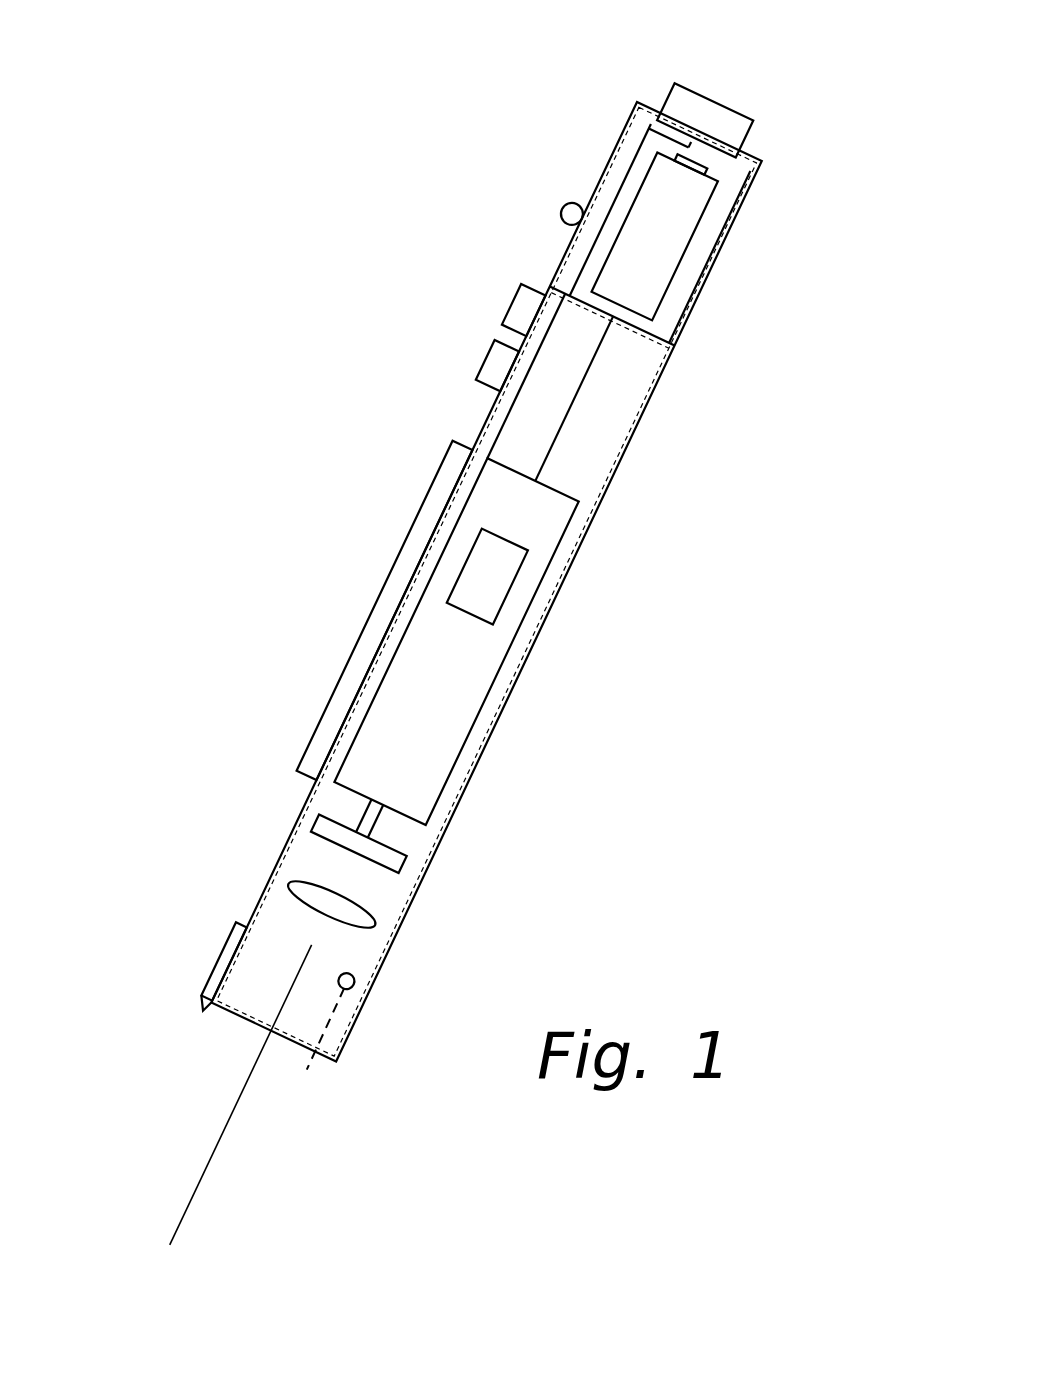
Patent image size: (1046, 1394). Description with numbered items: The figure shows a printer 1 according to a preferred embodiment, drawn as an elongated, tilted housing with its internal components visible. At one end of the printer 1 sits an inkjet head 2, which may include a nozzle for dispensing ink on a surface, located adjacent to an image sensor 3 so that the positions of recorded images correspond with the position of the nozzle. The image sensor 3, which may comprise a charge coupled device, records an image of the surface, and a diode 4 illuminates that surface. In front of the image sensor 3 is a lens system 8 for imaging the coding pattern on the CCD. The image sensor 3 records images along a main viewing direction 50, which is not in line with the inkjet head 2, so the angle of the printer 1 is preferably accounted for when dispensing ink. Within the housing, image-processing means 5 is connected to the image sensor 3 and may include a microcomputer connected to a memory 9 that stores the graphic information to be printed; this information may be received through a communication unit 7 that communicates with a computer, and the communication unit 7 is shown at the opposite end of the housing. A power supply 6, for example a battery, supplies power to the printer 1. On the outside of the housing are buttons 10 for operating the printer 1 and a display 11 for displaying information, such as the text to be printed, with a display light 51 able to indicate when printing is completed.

The printer 1 is at (418, 222).
The inkjet head 2 is at (232, 947).
The image sensor 3 is at (395, 853).
The diode 4 is at (352, 985).
The image-processing means 5 is at (457, 683).
The power supply 6 is at (653, 248).
The communication unit 7 is at (713, 105).
The lens system 8 is at (352, 908).
The memory 9 is at (512, 568).
The buttons 10 is at (524, 332).
The display 11 is at (390, 600).
The main viewing direction 50 is at (238, 1118).
The display light 51 is at (567, 212).